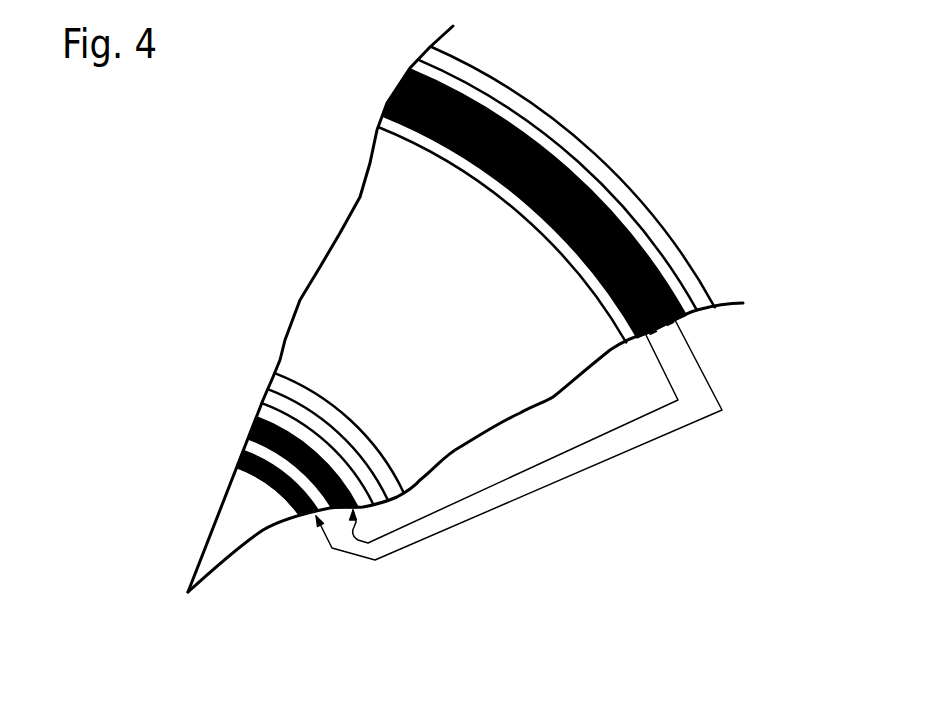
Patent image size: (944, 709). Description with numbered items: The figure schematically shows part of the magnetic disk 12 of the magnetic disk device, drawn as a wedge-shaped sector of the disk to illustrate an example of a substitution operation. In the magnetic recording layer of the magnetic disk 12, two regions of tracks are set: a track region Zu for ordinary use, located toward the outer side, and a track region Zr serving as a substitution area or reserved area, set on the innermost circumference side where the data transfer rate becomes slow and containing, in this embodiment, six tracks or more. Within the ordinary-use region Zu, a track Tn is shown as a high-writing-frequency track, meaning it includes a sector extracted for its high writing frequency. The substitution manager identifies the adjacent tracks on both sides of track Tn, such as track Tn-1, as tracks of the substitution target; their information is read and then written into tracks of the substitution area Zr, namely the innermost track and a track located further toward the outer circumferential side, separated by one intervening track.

The magnetic disk 12 is at (444, 311).
The track region for ordinary use Zu is at (502, 193).
The substitution area Zr is at (269, 480).
The high-writing-frequency track Tn is at (478, 100).
The adjacent track Tn-1 is at (523, 130).